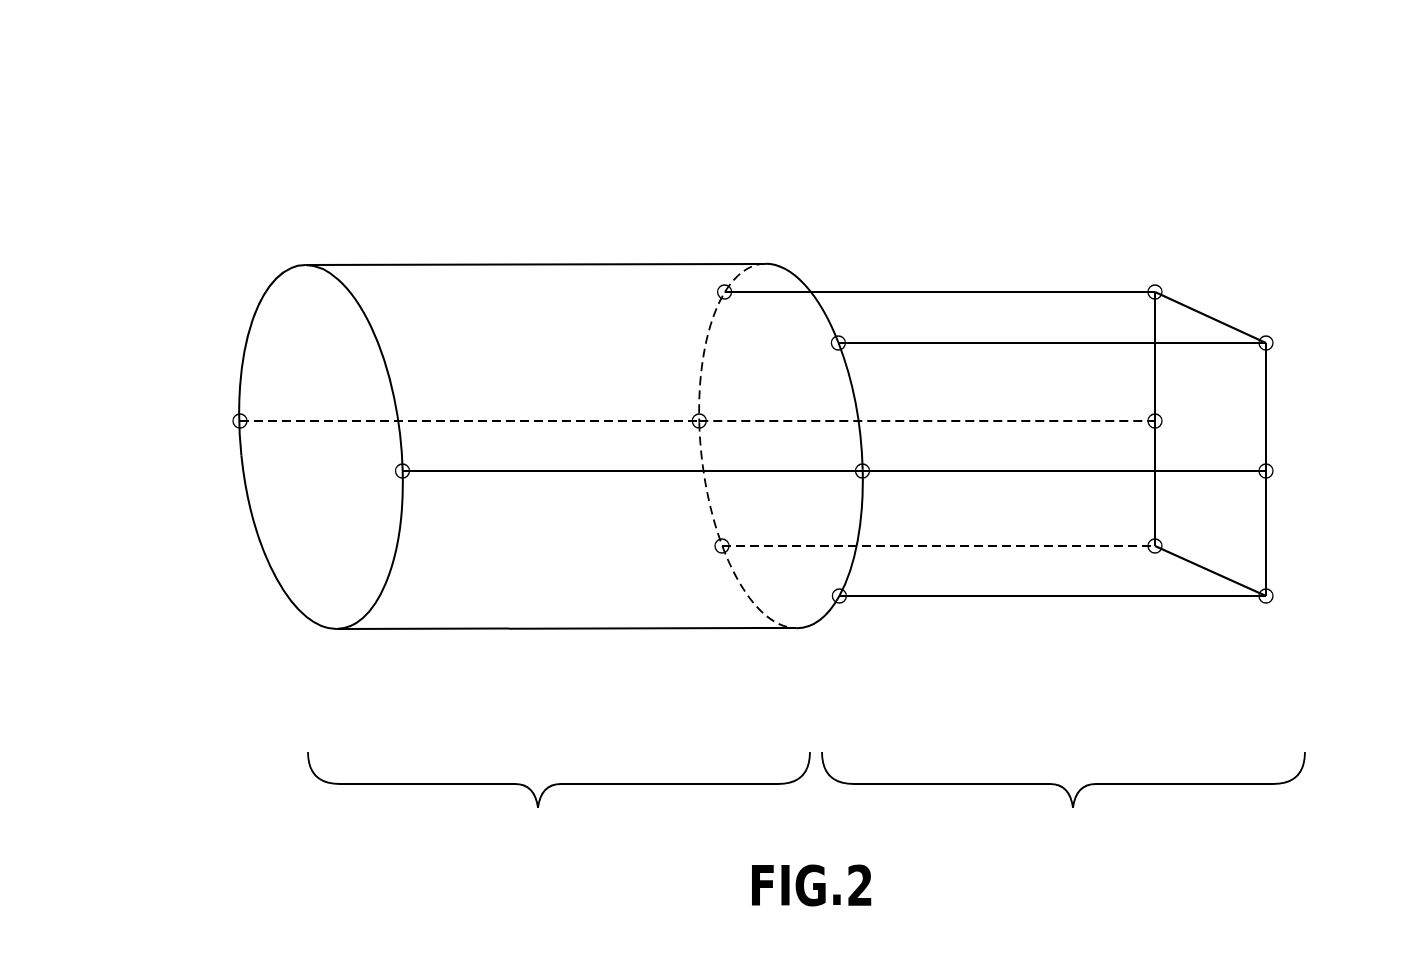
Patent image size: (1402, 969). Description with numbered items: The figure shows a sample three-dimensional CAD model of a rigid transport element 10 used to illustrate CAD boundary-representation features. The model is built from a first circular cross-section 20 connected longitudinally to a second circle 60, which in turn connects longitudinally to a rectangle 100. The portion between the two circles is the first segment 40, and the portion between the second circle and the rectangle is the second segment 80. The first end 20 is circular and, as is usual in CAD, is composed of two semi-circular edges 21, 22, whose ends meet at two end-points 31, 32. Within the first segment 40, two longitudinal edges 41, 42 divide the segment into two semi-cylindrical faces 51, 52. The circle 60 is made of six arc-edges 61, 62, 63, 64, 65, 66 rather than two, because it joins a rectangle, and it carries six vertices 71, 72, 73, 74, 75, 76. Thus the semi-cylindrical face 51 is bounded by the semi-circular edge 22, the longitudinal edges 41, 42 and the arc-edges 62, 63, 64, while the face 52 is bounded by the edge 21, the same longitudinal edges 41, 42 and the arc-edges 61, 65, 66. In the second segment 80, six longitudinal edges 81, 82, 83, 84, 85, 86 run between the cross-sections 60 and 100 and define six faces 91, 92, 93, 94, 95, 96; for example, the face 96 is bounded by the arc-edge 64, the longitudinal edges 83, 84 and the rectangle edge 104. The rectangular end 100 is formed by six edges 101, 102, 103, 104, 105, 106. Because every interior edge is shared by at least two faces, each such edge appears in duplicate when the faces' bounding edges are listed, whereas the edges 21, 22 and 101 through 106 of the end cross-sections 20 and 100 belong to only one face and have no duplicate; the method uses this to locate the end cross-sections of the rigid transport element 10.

The rigid transport element 10 is at (683, 132).
The first end cross-section 20 is at (345, 630).
The semi-circular edge 21 is at (272, 575).
The semi-circular edge 22 is at (276, 290).
The end-point 31 is at (233, 421).
The end-point 32 is at (405, 480).
The first segment 40 is at (535, 810).
The longitudinal edge 41 is at (290, 428).
The longitudinal edge 42 is at (540, 480).
The semi-cylindrical face 51 is at (500, 312).
The semi-cylindrical face 52 is at (698, 595).
The second circular cross-section 60 is at (774, 266).
The arc-edge 61 is at (701, 455).
The arc-edge 62 is at (707, 335).
The arc-edge 63 is at (838, 338).
The arc-edge 64 is at (855, 403).
The arc-edge 65 is at (858, 532).
The arc-edge 66 is at (806, 630).
The vertex 71 is at (692, 415).
The vertex 72 is at (718, 285).
The vertex 73 is at (846, 338).
The vertex 74 is at (869, 467).
The vertex 75 is at (846, 604).
The vertex 76 is at (729, 541).
The second segment 80 is at (1070, 810).
The longitudinal edge 81 is at (1023, 418).
The longitudinal edge 82 is at (1105, 288).
The longitudinal edge 83 is at (1213, 325).
The longitudinal edge 84 is at (1218, 468).
The longitudinal edge 85 is at (1205, 595).
The longitudinal edge 86 is at (993, 547).
The face 91 is at (988, 335).
The face 92 is at (1128, 372).
The face 93 is at (1053, 500).
The face 94 is at (1075, 588).
The face 95 is at (1207, 538).
The face 96 is at (1217, 400).
The rectangular cross-section 100 is at (1232, 322).
The edge 101 is at (1157, 485).
The edge 102 is at (1157, 367).
The edge 103 is at (1177, 340).
The edge 104 is at (1268, 400).
The edge 105 is at (1270, 510).
The edge 106 is at (1223, 578).